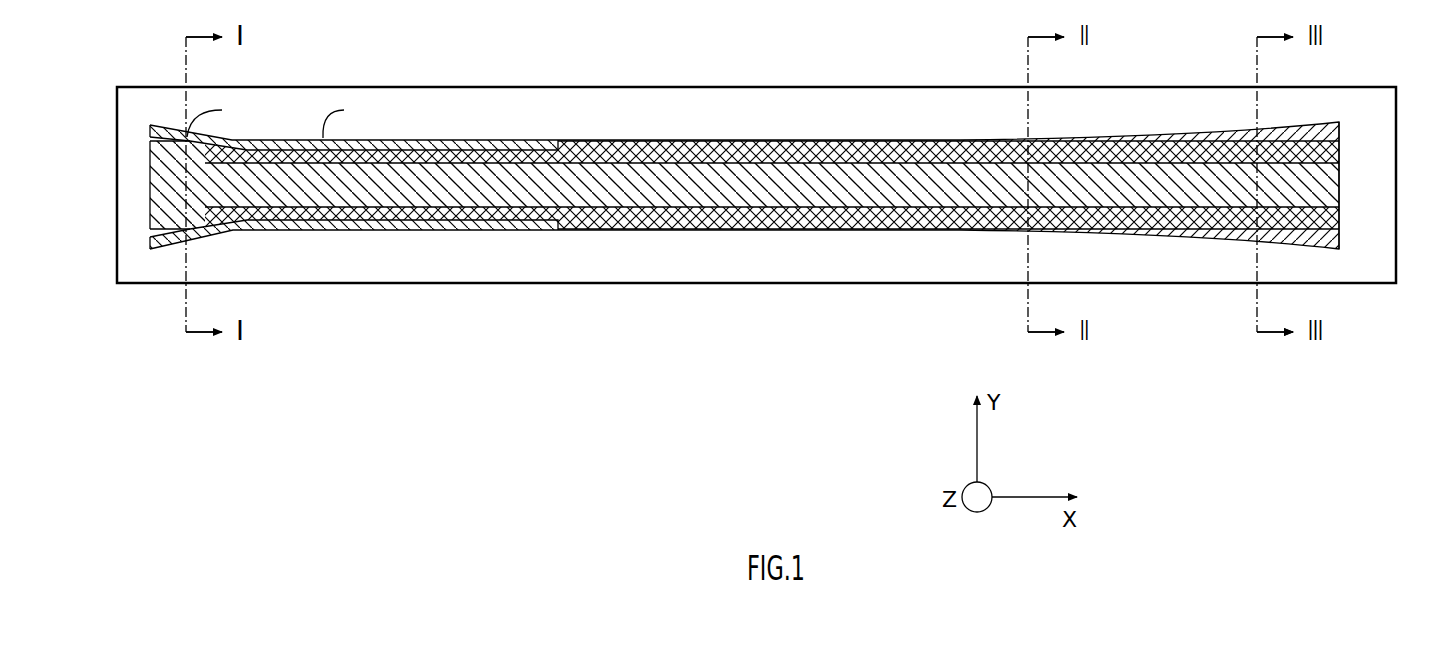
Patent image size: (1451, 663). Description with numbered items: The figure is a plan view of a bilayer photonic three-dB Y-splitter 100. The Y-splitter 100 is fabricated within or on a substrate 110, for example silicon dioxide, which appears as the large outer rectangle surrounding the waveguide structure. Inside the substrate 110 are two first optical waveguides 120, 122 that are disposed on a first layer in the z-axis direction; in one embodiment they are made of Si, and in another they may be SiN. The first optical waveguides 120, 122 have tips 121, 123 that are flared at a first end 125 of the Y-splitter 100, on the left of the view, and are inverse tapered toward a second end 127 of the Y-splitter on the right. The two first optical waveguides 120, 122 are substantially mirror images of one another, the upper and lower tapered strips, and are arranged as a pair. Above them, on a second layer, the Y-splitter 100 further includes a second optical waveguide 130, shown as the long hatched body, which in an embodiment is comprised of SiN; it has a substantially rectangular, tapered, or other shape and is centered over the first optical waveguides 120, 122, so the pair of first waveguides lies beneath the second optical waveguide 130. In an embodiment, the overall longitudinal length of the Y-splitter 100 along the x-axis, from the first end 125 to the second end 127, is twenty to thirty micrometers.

The bilayer photonic Y-splitter 100 is at (847, 71).
The substrate 110 is at (820, 284).
The first optical waveguide 120 is at (175, 122).
The tip 121 is at (152, 126).
The first optical waveguide 122 is at (193, 229).
The tip 123 is at (152, 247).
The first end 125 is at (141, 159).
The second end 127 is at (1350, 183).
The second optical waveguide 130 is at (157, 190).